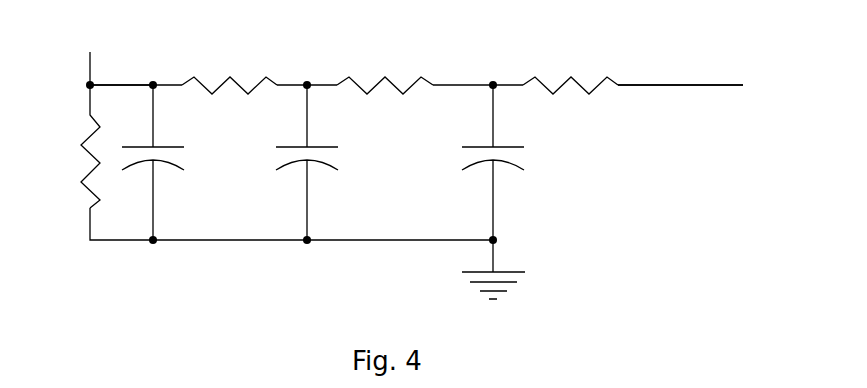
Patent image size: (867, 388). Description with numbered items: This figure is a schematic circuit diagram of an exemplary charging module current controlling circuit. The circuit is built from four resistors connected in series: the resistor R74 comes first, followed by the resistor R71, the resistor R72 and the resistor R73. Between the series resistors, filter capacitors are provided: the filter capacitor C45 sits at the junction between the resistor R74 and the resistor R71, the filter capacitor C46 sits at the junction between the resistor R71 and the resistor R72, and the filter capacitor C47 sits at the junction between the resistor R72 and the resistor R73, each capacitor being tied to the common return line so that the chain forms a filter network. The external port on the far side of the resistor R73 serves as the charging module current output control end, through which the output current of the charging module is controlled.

The resistor R71 is at (229, 70).
The resistor R72 is at (385, 70).
The resistor R73 is at (570, 69).
The resistor R74 is at (65, 146).
The filter capacitor C45 is at (175, 162).
The filter capacitor C46 is at (339, 162).
The filter capacitor C47 is at (517, 162).